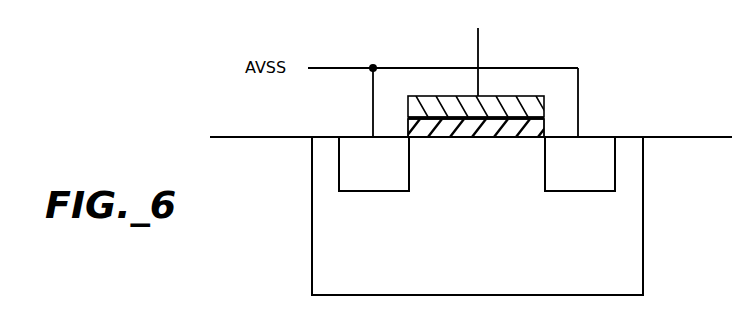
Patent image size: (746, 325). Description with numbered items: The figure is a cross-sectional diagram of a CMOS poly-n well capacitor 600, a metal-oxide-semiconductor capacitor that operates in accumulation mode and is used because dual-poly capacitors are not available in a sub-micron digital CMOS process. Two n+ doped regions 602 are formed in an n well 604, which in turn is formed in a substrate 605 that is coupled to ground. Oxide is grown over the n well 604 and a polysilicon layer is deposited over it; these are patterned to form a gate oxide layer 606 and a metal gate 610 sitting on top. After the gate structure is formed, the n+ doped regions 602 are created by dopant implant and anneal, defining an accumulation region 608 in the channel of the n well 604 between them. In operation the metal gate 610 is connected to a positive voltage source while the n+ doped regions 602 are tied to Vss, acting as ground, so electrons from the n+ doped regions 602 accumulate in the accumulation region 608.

The poly-n well capacitor 600 is at (547, 58).
The n+ doped regions 602 is at (380, 186).
The n well 604 is at (496, 272).
The substrate 605 is at (265, 182).
The gate oxide layer 606 is at (540, 128).
The accumulation region 608 is at (496, 168).
The metal gate 610 is at (542, 107).